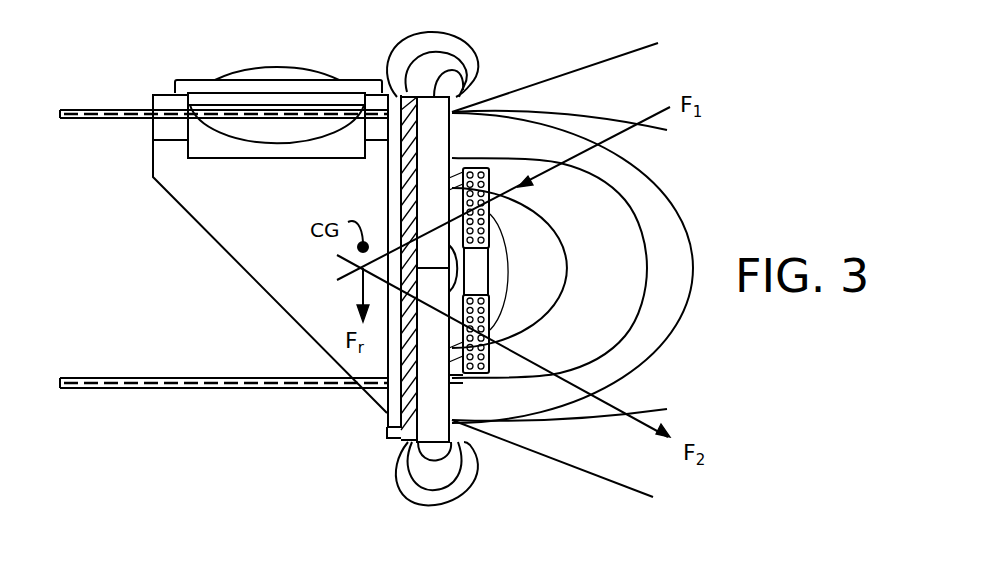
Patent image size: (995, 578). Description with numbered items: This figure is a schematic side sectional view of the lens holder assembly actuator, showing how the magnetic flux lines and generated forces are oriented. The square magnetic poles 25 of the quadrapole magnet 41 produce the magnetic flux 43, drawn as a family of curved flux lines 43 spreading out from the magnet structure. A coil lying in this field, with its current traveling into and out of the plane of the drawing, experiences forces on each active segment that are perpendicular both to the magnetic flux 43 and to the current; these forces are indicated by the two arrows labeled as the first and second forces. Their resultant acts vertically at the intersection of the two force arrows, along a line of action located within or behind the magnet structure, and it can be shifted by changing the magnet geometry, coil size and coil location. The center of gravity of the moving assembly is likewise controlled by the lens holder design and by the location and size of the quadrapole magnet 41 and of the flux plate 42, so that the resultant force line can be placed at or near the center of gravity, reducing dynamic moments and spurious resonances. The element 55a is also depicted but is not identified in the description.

The square magnetic poles 25 is at (445, 142).
The quadrapole magnet 41 is at (432, 88).
The flux plate 42 is at (387, 428).
The magnetic flux 43 is at (462, 48).
The speaker 55a is at (500, 214).